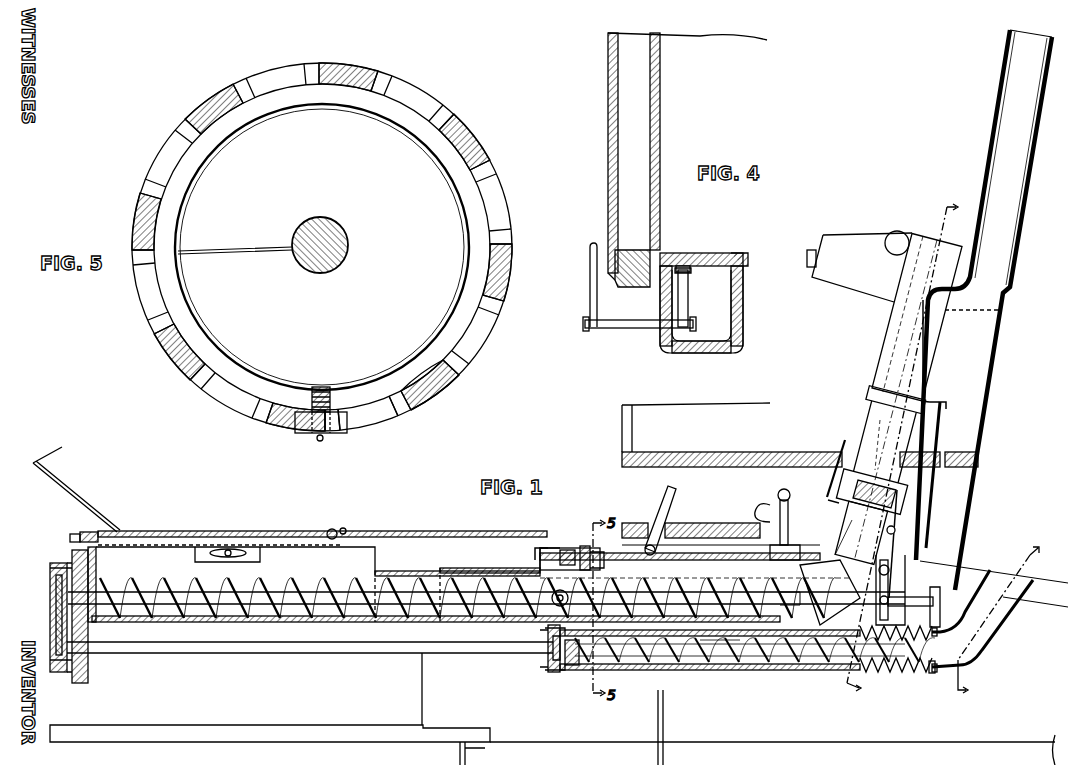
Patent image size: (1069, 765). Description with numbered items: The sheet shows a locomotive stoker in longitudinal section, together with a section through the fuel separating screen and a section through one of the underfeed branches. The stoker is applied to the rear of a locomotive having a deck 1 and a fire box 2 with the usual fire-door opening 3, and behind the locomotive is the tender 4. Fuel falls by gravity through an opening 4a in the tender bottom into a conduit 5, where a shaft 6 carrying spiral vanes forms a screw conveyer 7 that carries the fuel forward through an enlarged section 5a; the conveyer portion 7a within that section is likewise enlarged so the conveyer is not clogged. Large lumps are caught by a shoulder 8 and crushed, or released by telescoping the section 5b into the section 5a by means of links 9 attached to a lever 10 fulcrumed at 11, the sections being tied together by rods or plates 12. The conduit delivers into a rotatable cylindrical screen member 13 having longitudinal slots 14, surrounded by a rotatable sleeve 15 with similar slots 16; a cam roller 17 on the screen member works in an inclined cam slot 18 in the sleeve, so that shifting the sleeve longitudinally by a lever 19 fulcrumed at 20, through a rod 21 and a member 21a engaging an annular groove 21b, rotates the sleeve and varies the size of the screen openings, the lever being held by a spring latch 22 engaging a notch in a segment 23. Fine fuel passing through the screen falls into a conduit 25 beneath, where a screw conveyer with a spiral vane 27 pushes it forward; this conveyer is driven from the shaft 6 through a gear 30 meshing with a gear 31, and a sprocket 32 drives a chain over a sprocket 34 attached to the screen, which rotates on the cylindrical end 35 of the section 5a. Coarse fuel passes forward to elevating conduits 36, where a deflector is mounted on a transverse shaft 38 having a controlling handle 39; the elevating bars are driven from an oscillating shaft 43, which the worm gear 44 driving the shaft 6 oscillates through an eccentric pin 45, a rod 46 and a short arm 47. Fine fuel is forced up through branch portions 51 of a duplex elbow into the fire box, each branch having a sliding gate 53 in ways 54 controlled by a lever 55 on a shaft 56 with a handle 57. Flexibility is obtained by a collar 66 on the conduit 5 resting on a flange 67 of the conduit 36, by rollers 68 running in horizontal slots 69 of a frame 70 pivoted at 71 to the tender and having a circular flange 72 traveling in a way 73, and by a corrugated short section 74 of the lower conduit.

In FIG. 1, the deck 1 is at (714, 460).
In FIG. 1, the fire box 2 is at (957, 363).
In FIG. 1, the fire-door opening 3 is at (981, 498).
In FIG. 1, the tender 4 is at (112, 527).
In FIG. 1, the opening 4a is at (206, 530).
In FIG. 1, the conduit 5 is at (231, 584).
In FIG. 1, the enlarged section 5a is at (486, 574).
In FIG. 1, the telescoping section 5b is at (408, 572).
In FIG. 5, the shaft 6 is at (268, 244).
In FIG. 1, the shaft 6 is at (252, 592).
In FIG. 1, the screw conveyer 7 is at (290, 585).
In FIG. 5, the conveyer 7a is at (322, 247).
In FIG. 1, the conveyer 7a is at (688, 575).
In FIG. 1, the shoulder 8 is at (380, 572).
In FIG. 1, the links 9 is at (455, 572).
In FIG. 1, the lever 10 is at (668, 500).
In FIG. 1, the fulcrum 11 is at (649, 544).
In FIG. 1, the tight rods or plates 12 is at (484, 623).
In FIG. 5, the cylindrical screen member 13 is at (345, 388).
In FIG. 1, the cylindrical screen member 13 is at (563, 549).
In FIG. 5, the longitudinal slots 14 is at (395, 378).
In FIG. 1, the longitudinal slots 14 is at (726, 553).
In FIG. 5, the cylindrical sleeve 15 is at (446, 382).
In FIG. 1, the cylindrical sleeve 15 is at (582, 540).
In FIG. 5, the longitudinal slots 16 is at (412, 402).
In FIG. 1, the longitudinal slots 16 is at (672, 553).
In FIG. 5, the cam roller 17 is at (340, 426).
In FIG. 1, the cam roller 17 is at (568, 602).
In FIG. 5, the cam slot 18 is at (297, 432).
In FIG. 1, the cam slot 18 is at (600, 557).
In FIG. 1, the lever 19 is at (795, 500).
In FIG. 1, the fulcrum 20 is at (818, 560).
In FIG. 1, the rod 21 is at (772, 595).
In FIG. 1, the member 21a is at (537, 554).
In FIG. 1, the annular groove 21b is at (570, 666).
In FIG. 1, the spring latch 22 is at (762, 510).
In FIG. 1, the segment 23 is at (795, 545).
In FIG. 1, the fine fuel conduit 25 is at (700, 660).
In FIG. 1, the spiral vane 27 is at (728, 670).
In FIG. 1, the gear 30 is at (56, 568).
In FIG. 1, the gear 31 is at (58, 628).
In FIG. 1, the sprocket 32 is at (550, 670).
In FIG. 1, the sprocket 34 is at (546, 547).
In FIG. 1, the cylindrical end 35 is at (545, 632).
In FIG. 1, the conduits 36 is at (884, 366).
In FIG. 1, the transverse rod or shaft 38 is at (874, 470).
In FIG. 1, the controlling handle 39 is at (845, 442).
In FIG. 1, the oscillating shaft 43 is at (888, 488).
In FIG. 1, the worm gear 44 is at (892, 566).
In FIG. 1, the eccentric pin 45 is at (936, 601).
In FIG. 1, the rod 46 is at (905, 530).
In FIG. 1, the short arm 47 is at (902, 516).
In FIG. 4, the branch portions 51 is at (728, 318).
In FIG. 1, the branch portions 51 is at (990, 615).
In FIG. 4, the sliding gate 53 is at (706, 258).
In FIG. 4, the ways 54 is at (752, 262).
In FIG. 4, the levers 55 is at (690, 296).
In FIG. 4, the shafts 56 is at (633, 328).
In FIG. 4, the controlling lever or handle 57 is at (590, 290).
In FIG. 1, the collar 66 is at (856, 546).
In FIG. 1, the flange 67 is at (861, 563).
In FIG. 1, the rollers 68 is at (235, 545).
In FIG. 1, the horizontal slots 69 is at (246, 552).
In FIG. 1, the frame 70 is at (327, 532).
In FIG. 1, the pivot 71 is at (344, 528).
In FIG. 1, the circular projection or flange 72 is at (88, 532).
In FIG. 1, the way 73 is at (78, 534).
In FIG. 1, the short section 74 is at (897, 674).